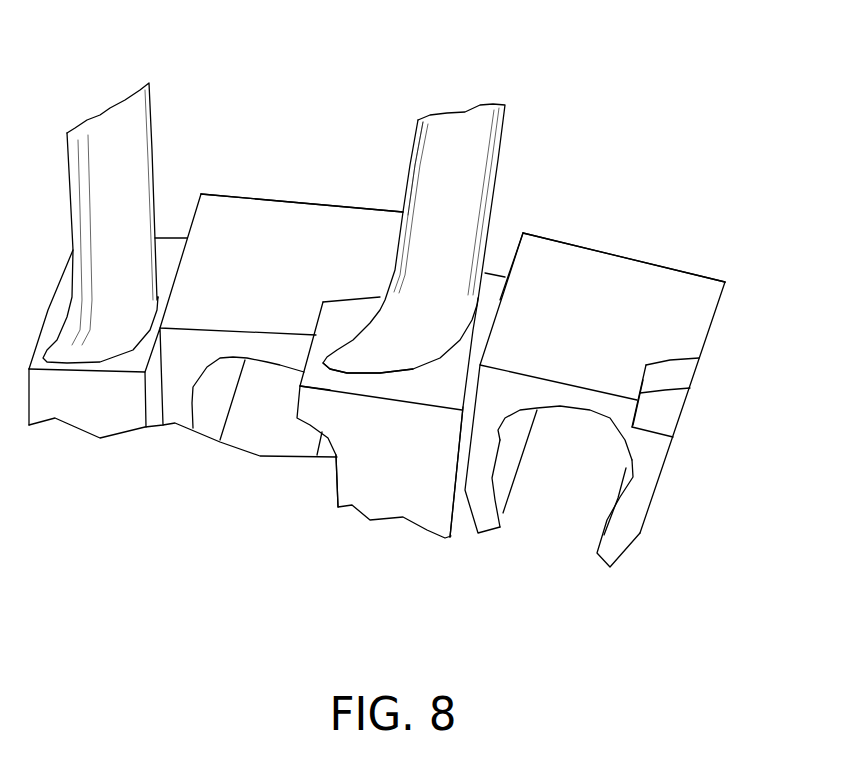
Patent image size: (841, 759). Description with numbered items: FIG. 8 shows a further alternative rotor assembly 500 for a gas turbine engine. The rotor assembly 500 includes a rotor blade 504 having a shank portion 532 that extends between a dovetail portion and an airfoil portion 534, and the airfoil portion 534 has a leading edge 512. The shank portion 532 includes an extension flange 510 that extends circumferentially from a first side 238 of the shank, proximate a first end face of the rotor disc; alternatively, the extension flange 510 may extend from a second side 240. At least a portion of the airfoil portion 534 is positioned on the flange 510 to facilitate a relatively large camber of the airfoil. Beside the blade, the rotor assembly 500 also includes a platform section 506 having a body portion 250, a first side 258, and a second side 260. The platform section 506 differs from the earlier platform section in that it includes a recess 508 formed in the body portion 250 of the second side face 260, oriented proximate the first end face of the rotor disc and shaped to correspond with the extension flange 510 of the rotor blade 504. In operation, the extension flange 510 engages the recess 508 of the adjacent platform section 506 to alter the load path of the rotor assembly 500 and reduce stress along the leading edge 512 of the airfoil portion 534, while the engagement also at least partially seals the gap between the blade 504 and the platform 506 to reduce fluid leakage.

The rotor assembly 500 is at (690, 110).
The rotor blade 504 is at (500, 163).
The platform section 506 is at (634, 372).
The airfoil portion 534 is at (448, 133).
The leading edge 512 is at (380, 314).
The first side 258 is at (513, 248).
The body portion 250 is at (685, 290).
The second side 260 is at (715, 324).
The recess 508 is at (675, 410).
The extension flange 510 is at (320, 403).
The shank portion 532 is at (311, 366).
The first side 238 is at (337, 488).
The second side 240 is at (462, 505).